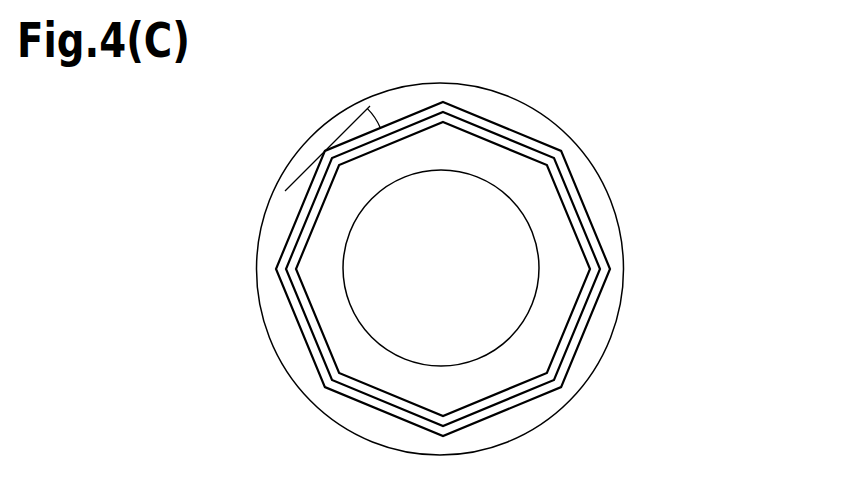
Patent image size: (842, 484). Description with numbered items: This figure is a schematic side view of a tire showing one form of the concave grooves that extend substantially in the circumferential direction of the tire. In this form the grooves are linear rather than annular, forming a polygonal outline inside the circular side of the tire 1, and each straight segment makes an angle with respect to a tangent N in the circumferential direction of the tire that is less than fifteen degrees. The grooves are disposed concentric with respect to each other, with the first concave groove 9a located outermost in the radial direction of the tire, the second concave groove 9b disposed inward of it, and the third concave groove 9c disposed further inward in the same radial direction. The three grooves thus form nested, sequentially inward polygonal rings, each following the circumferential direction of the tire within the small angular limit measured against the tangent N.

The pneumatic tire / annular body 1 is at (588, 142).
The first concave groove 9a is at (577, 189).
The second concave groove 9b is at (577, 212).
The third concave groove 9c is at (578, 302).
The tangent in the circumferential direction of the tire N is at (298, 175).